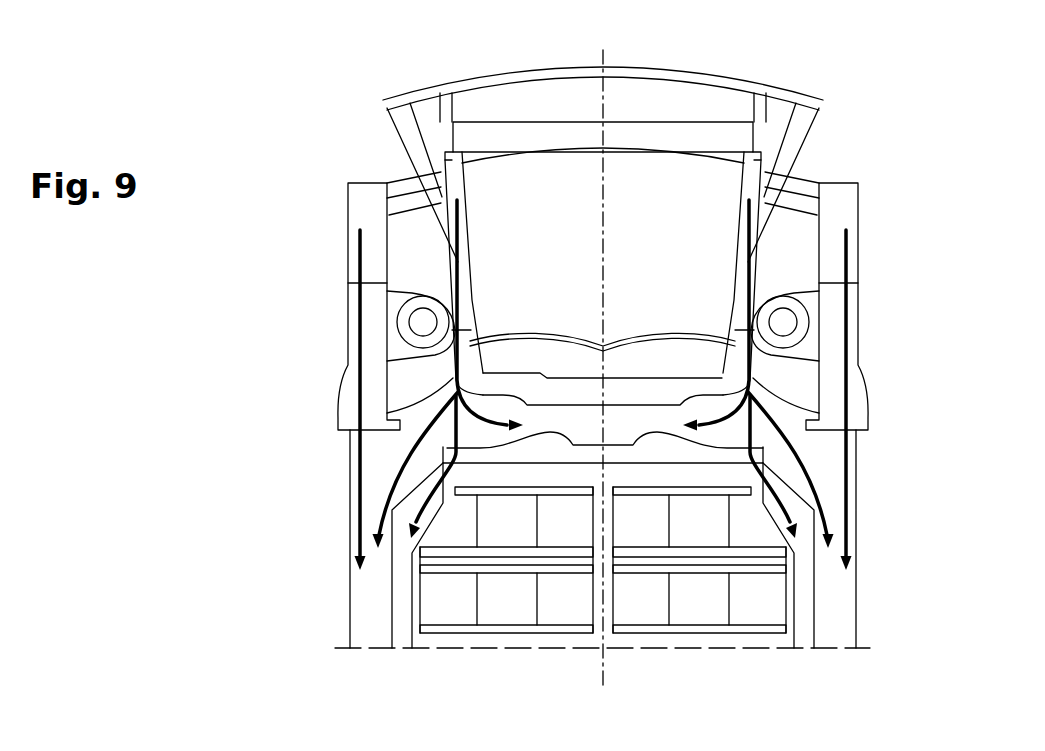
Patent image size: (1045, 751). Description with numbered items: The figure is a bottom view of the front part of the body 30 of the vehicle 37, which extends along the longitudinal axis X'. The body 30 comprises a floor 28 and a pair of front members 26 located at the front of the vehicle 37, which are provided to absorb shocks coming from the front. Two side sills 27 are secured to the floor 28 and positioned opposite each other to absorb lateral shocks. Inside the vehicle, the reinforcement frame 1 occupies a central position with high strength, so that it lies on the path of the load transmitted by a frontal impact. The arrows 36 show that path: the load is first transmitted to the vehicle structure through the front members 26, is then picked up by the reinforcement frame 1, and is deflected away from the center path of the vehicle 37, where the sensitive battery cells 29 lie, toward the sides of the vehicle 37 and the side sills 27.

The reinforcement frame 1 is at (403, 627).
The front members 26 is at (452, 160).
The side sills 27 is at (368, 602).
The floor 28 is at (888, 225).
The battery cells 29 is at (747, 603).
The body 30 is at (862, 136).
The arrows 36 is at (400, 455).
The vehicle 37 is at (902, 108).